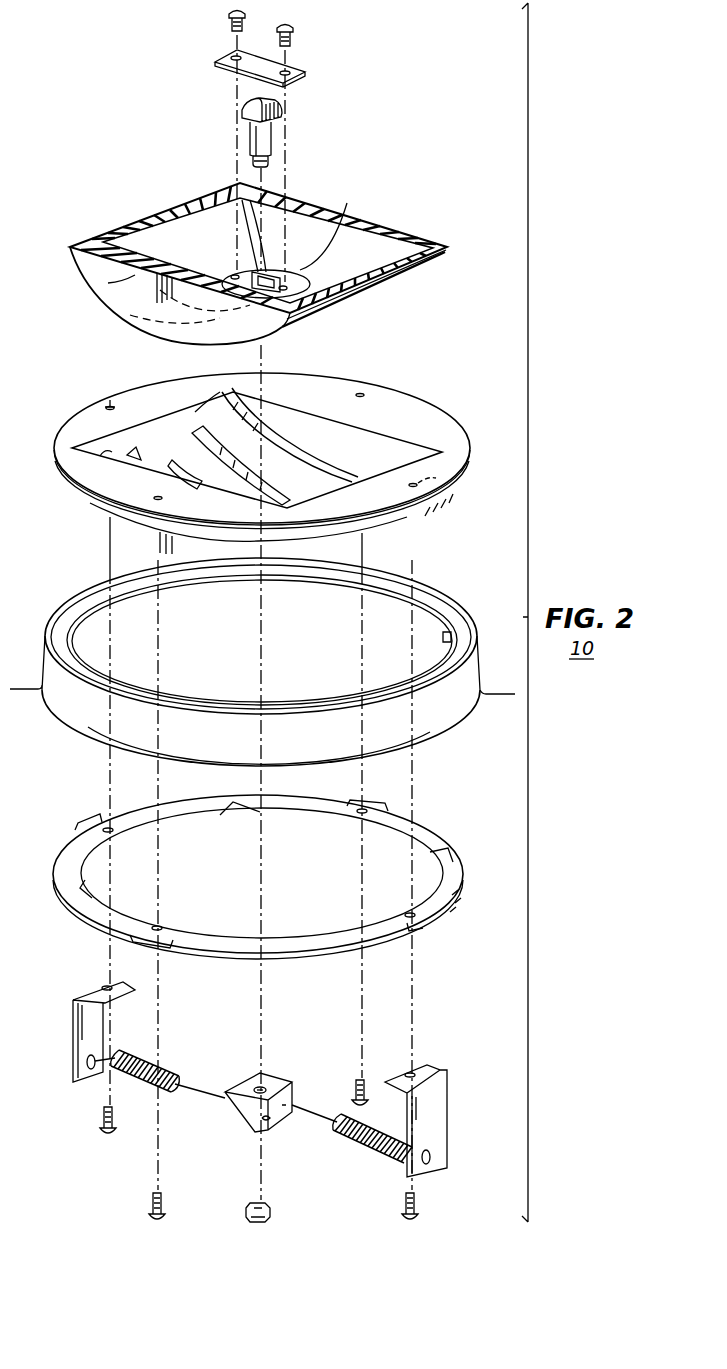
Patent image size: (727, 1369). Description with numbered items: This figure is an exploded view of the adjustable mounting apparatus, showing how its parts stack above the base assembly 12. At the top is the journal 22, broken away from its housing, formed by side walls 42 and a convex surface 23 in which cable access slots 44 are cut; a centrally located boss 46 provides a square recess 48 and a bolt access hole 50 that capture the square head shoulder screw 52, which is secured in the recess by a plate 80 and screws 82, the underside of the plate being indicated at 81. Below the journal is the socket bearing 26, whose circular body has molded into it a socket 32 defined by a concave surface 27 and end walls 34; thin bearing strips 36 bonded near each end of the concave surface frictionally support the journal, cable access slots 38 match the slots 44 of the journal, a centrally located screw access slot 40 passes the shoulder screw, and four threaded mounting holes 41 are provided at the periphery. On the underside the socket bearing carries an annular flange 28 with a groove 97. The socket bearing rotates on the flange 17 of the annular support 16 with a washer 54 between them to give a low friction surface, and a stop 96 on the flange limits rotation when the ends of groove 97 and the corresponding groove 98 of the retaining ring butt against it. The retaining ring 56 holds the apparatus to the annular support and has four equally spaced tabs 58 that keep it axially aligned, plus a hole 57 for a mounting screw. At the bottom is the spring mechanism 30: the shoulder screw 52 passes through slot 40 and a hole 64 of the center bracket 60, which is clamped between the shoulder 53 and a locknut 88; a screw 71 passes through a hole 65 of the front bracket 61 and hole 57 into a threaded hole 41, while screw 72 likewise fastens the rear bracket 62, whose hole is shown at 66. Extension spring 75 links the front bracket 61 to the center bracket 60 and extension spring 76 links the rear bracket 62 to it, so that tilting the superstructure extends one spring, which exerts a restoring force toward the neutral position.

The base assembly 12 is at (500, 694).
The annular support 16 is at (452, 719).
The flange 17 is at (342, 582).
The journal 22 is at (458, 238).
The convex surface 23 is at (365, 292).
The socket bearing 26 is at (465, 426).
The concave surface 27 is at (195, 412).
The annular flange 28 is at (383, 528).
The spring mechanism 30 is at (454, 1022).
The socket 32 is at (165, 412).
The end walls 34 is at (320, 428).
The bearing strips 36 is at (234, 392).
The cable access slots 38 is at (240, 470).
The screw access slot 40 is at (190, 462).
The threaded mounting holes 41 is at (110, 400).
The side walls 42 is at (367, 225).
The cable access slots 44 is at (120, 338).
The boss 46 is at (247, 268).
The square recess 48 is at (267, 278).
The bolt access hole 50 is at (240, 198).
The square head shoulder screw 52 is at (283, 107).
The shoulder 53 is at (270, 162).
The washer 54 is at (455, 625).
The retaining ring 56 is at (457, 841).
The hole 57 is at (111, 825).
The tabs 58 is at (88, 822).
The center bracket 60 is at (287, 1081).
The front bracket 61 is at (73, 1022).
The rear bracket 62 is at (438, 1112).
The hole 64 is at (263, 1086).
The hole 65 is at (105, 985).
The bracket hole 66 is at (415, 1072).
The screw 71 is at (102, 1120).
The screw 72 is at (402, 1205).
The extension spring 75 is at (168, 1074).
The extension spring 76 is at (365, 1145).
The plate 80 is at (305, 80).
The plate underside 81 is at (250, 78).
The screws 82 is at (291, 27).
The locknut 88 is at (268, 1210).
The stop 96 is at (442, 637).
The groove 97 is at (420, 514).
The groove 98 is at (455, 905).